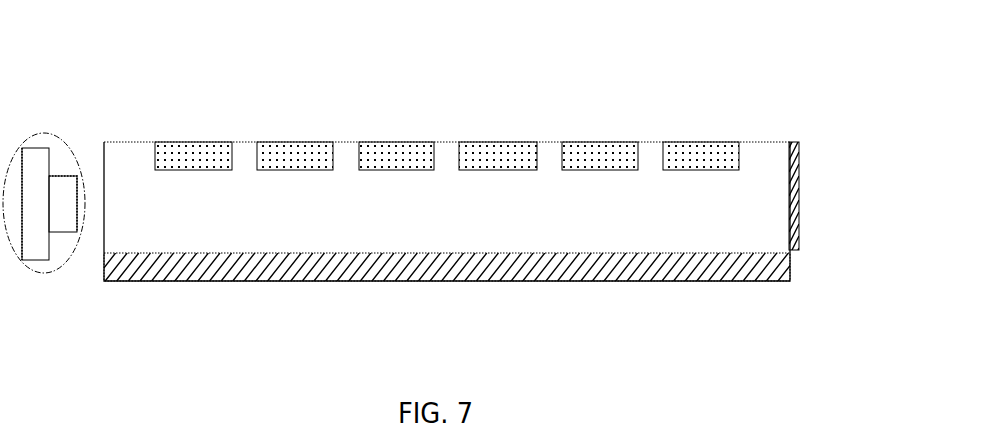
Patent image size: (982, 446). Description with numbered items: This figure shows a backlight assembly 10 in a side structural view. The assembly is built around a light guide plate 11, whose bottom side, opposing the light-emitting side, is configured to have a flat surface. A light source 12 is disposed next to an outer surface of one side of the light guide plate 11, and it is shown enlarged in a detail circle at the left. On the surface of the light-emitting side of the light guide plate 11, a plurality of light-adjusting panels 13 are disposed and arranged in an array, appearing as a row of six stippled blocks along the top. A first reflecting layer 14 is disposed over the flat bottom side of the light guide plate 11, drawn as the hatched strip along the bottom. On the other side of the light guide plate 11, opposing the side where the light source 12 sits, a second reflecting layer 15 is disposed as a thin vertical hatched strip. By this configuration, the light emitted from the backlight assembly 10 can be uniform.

The backlight assembly 10 is at (160, 46).
The light guide plate 11 is at (455, 223).
The light source 12 is at (70, 152).
The light-adjusting panels 13 is at (700, 157).
The first reflecting layer 14 is at (375, 265).
The second reflecting layer 15 is at (795, 160).